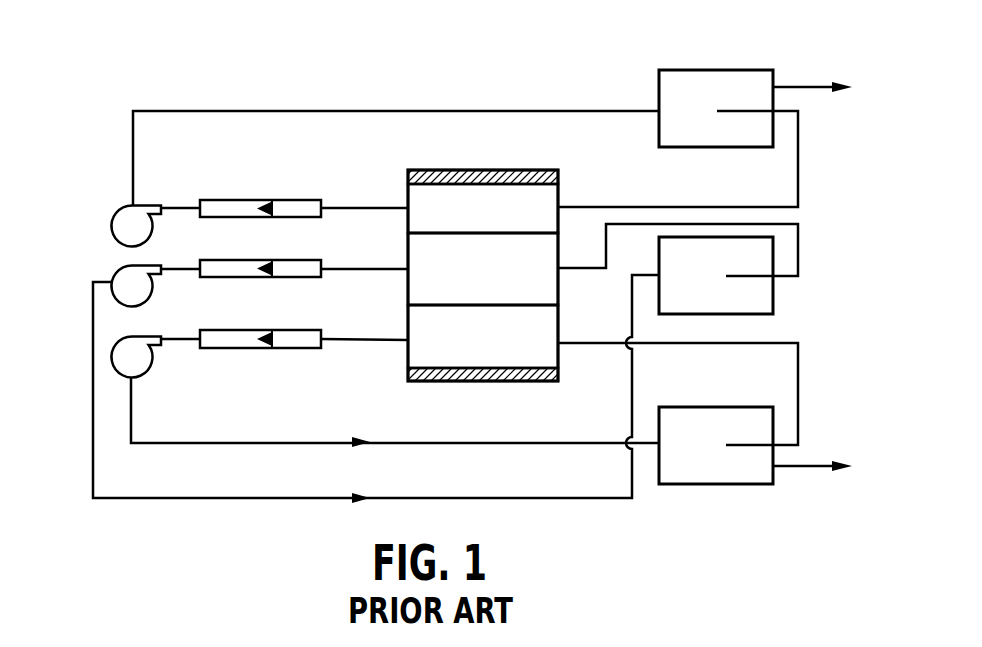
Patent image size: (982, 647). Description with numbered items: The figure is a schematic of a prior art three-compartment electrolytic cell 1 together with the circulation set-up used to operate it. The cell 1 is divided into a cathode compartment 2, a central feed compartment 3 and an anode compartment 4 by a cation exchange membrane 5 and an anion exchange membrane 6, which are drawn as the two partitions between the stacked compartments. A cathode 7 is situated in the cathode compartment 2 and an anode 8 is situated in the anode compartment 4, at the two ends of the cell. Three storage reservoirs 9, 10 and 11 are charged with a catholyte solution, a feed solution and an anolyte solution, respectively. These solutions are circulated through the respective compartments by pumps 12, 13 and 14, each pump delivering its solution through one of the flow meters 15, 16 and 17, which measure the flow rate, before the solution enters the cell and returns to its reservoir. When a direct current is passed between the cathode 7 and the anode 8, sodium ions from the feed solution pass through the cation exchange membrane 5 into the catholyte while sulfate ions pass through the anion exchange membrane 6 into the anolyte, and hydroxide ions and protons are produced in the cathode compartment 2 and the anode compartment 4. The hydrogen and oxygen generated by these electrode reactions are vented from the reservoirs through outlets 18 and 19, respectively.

The three-compartment electrolytic cell 1 is at (486, 158).
The cathode compartment 2 is at (413, 197).
The central (feed) compartment 3 is at (413, 258).
The anode compartment 4 is at (413, 331).
The cation exchange membrane 5 is at (514, 233).
The anion exchange membrane 6 is at (514, 305).
The cathode 7 is at (546, 172).
The anode 8 is at (488, 382).
The storage reservoir 9 is at (699, 76).
The storage reservoir 10 is at (713, 243).
The storage reservoir 11 is at (713, 432).
The pump 12 is at (127, 207).
The pump 13 is at (118, 281).
The pump 14 is at (137, 357).
The flow meter 15 is at (210, 205).
The flow meter 16 is at (222, 265).
The flow meter 17 is at (222, 337).
The outlet 18 is at (795, 82).
The outlet 19 is at (812, 462).